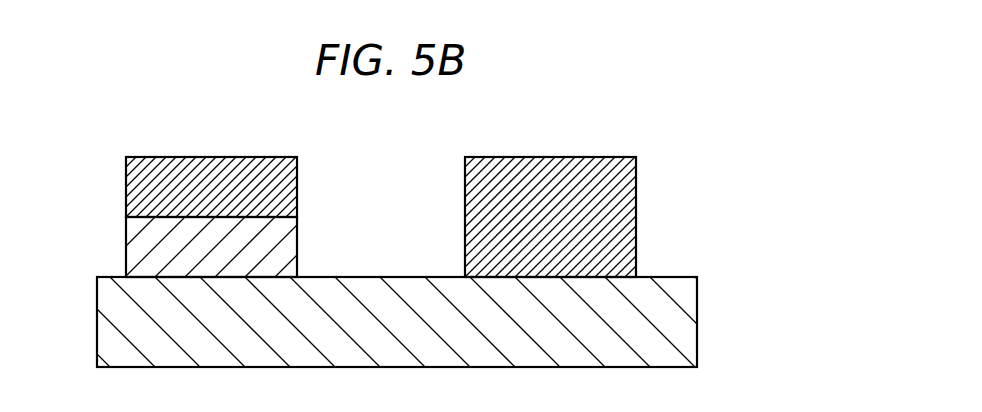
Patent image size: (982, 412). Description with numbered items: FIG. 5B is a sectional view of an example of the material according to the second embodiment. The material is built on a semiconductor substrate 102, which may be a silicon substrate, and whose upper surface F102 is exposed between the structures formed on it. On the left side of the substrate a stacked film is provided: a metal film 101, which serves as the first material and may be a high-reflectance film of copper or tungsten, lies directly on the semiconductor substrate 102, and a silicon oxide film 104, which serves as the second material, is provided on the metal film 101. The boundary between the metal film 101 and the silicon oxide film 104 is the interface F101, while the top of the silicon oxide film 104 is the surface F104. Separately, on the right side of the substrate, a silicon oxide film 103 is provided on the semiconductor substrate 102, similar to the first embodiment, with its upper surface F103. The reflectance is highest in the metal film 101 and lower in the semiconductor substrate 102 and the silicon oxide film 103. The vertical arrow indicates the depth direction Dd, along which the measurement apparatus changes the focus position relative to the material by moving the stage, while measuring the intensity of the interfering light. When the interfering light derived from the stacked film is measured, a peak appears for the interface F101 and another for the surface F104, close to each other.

The metal film 101 is at (133, 238).
The semiconductor substrate 102 is at (683, 320).
The silicon oxide film 103 is at (636, 217).
The silicon oxide film 104 is at (132, 185).
The interface F101 is at (272, 214).
The surface F102 is at (377, 273).
The surface F103 is at (551, 157).
The surface F104 is at (207, 157).
The depth direction Dd is at (69, 282).